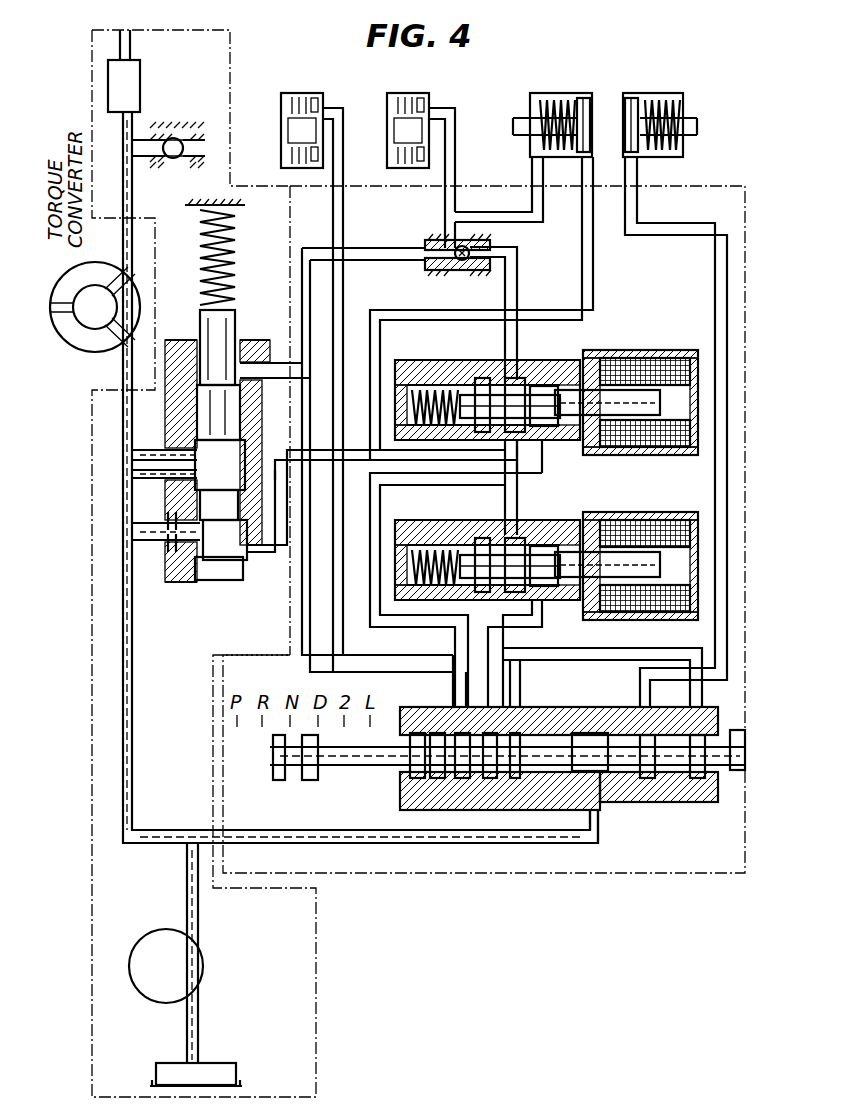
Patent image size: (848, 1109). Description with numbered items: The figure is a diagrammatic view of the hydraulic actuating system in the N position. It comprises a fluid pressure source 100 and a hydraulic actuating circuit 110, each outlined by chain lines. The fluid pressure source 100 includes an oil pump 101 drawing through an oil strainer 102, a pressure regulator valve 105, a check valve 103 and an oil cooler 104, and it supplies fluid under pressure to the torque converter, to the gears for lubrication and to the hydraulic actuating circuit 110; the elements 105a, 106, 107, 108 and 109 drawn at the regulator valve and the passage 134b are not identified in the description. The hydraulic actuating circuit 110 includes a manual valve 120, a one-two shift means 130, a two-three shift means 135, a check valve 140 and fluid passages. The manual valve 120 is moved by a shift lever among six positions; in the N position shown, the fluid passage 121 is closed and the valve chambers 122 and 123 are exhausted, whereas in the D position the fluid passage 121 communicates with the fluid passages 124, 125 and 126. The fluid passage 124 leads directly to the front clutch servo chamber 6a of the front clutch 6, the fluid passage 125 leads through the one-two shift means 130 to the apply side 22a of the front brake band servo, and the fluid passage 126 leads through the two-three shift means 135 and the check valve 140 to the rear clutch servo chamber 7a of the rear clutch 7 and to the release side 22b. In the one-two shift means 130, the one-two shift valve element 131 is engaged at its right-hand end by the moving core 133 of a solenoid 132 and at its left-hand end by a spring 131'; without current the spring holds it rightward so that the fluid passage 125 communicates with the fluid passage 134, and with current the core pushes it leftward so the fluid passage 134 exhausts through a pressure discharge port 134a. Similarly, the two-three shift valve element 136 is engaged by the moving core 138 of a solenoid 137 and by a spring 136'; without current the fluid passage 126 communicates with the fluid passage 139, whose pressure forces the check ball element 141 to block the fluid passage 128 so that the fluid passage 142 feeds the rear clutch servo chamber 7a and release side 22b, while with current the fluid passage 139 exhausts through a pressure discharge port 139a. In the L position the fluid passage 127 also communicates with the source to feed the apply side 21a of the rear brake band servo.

The front clutch 6 is at (300, 93).
The front clutch servo chamber 6a is at (323, 112).
The rear clutch 7 is at (406, 93).
The rear clutch servo chamber 7a is at (432, 112).
The apply side of the servo for the rear brake band 21a is at (634, 97).
The apply side of the servo for the front brake band 22a is at (586, 97).
The release side of the servo for the front brake band 22b is at (564, 110).
The fluid pressure source 100 is at (316, 940).
The oil pump 101 is at (204, 962).
The oil strainer 102 is at (226, 1064).
The check valve 103 is at (174, 138).
The oil cooler 104 is at (140, 74).
The pressure regulator valve 105 is at (209, 412).
The regulator valve spool 105a is at (222, 322).
The regulator spring 106 is at (233, 232).
The valve land 107 is at (226, 350).
The plunger 108 is at (243, 580).
The valve body end 109 is at (215, 582).
The hydraulic actuating circuit 110 is at (430, 874).
The manual valve 120 is at (280, 782).
The fluid passage 121 is at (596, 818).
The valve chamber 122 is at (580, 790).
The valve chamber 123 is at (672, 780).
The fluid passage 124 is at (514, 684).
The fluid passage 125 is at (505, 668).
The fluid passage 126 is at (453, 700).
The fluid passage 127 is at (730, 660).
The fluid passage 128 is at (616, 652).
The 1-2 shift means 130 is at (626, 541).
The 1-2 shift valve element 131 is at (488, 598).
The spring 131' is at (438, 548).
The solenoid 132 is at (644, 530).
The moving core 133 is at (570, 554).
The fluid passage 134 is at (582, 254).
The pressure discharge port 134a is at (486, 537).
The conduit 134b is at (278, 460).
The 2-3 shift means 135 is at (628, 395).
The 2-3 shift valve element 136 is at (549, 455).
The spring 136' is at (436, 388).
The solenoid 137 is at (655, 372).
The moving core 138 is at (652, 432).
The fluid passage 139 is at (487, 382).
The pressure discharge port 139a is at (484, 377).
The check valve 140 is at (439, 270).
The check ball element 141 is at (462, 268).
The fluid passage 142 is at (445, 232).